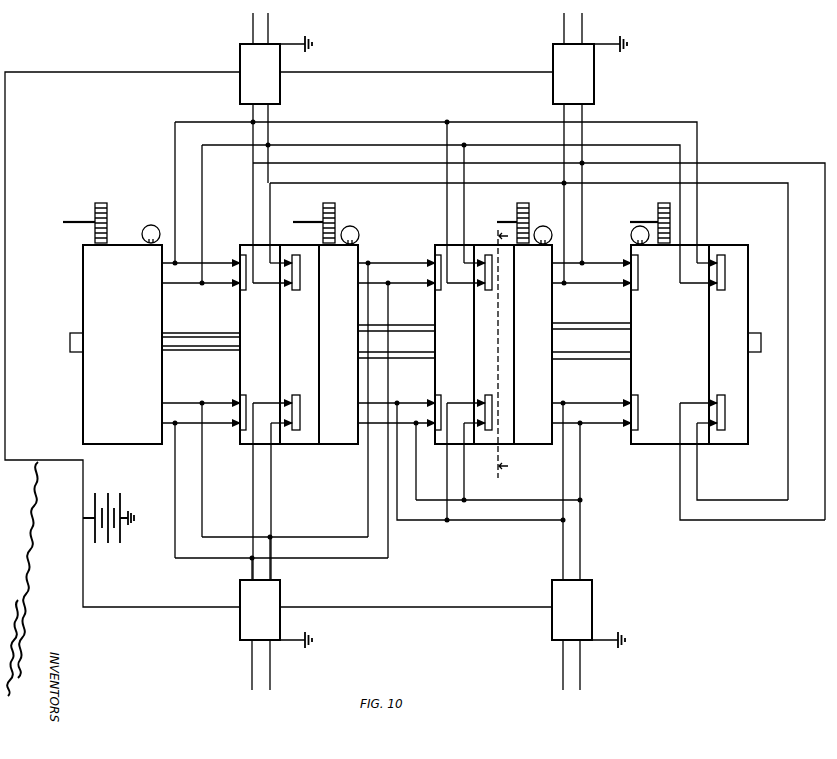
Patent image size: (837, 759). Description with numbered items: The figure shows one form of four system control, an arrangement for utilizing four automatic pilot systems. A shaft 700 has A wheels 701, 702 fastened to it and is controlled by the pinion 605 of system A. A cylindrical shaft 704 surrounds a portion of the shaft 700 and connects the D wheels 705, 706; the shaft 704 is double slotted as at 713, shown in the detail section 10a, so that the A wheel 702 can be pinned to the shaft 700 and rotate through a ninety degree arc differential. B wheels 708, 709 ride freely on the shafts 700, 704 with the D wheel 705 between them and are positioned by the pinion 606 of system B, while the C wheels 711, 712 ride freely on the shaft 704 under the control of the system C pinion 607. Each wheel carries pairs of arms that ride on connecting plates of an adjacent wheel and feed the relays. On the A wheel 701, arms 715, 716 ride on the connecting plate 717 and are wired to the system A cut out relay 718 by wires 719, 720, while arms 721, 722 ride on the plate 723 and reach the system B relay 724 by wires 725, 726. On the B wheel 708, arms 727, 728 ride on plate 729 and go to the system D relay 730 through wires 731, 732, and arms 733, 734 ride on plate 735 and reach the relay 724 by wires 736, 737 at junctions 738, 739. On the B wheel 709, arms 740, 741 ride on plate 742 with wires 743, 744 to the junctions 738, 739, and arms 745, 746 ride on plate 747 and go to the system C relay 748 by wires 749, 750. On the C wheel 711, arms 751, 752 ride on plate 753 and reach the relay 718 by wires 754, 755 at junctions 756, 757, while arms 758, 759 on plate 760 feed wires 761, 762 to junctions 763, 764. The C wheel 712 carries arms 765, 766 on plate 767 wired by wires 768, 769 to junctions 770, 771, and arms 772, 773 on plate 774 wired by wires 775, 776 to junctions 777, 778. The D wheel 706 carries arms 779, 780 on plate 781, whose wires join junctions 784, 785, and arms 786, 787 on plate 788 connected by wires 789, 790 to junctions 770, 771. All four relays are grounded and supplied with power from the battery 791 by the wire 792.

The shaft 700 is at (70, 347).
The A wheel 701 is at (103, 447).
The A wheel 702 is at (494, 344).
The cylindrical shaft 704 is at (396, 341).
The D wheel 705 is at (300, 446).
The D wheel 706 is at (642, 447).
The B wheel 708 is at (243, 447).
The B wheel 709 is at (345, 446).
The C wheel 711 is at (454, 344).
The C wheel 712 is at (533, 344).
The double slot 713 is at (728, 344).
The arm 715 is at (182, 270).
The arm 716 is at (186, 290).
The connecting plate 717 is at (657, 198).
The system A cut out relay 718 is at (238, 48).
The wire 719 is at (185, 122).
The wire 720 is at (227, 138).
The arm 721 is at (176, 400).
The arm 722 is at (196, 424).
The connecting plate 723 is at (236, 394).
The system B relay 724 is at (238, 633).
The wire 725 is at (174, 486).
The wire 726 is at (206, 521).
The arm 727 is at (270, 268).
The arm 728 is at (262, 290).
The connecting plate 729 is at (294, 293).
The system D relay 730 is at (596, 76).
The wire 731 is at (292, 162).
The wire 732 is at (292, 182).
The arm 733 is at (268, 402).
The arm 734 is at (272, 420).
The connecting plate 735 is at (295, 392).
The wire 736 is at (250, 498).
The wire 737 is at (280, 486).
The junction 738 is at (250, 558).
The junction 739 is at (276, 536).
The arm 740 is at (372, 260).
The arm 741 is at (406, 286).
The connecting plate 742 is at (434, 256).
The wire 743 is at (332, 524).
The wire 744 is at (318, 558).
The arm 745 is at (418, 404).
The arm 746 is at (410, 420).
The plate 747 is at (444, 391).
The system C relay 748 is at (594, 612).
The wire 749 is at (410, 520).
The wire 750 is at (418, 492).
The arm 751 is at (462, 268).
The arm 752 is at (454, 290).
The connecting plate 753 is at (492, 258).
The wire 754 is at (447, 217).
The wire 755 is at (466, 216).
The junction 756 is at (250, 125).
The junction 757 is at (268, 148).
The arm 758 is at (462, 402).
The arm 759 is at (466, 420).
The connecting plate 760 is at (488, 392).
The wire 761 is at (446, 470).
The wire 762 is at (464, 462).
The junction 763 is at (440, 525).
The junction 764 is at (466, 496).
The arm 765 is at (590, 260).
The arm 766 is at (590, 276).
The connection plate 767 is at (638, 292).
The wire 768 is at (550, 222).
The wire 769 is at (584, 222).
The junction 770 is at (556, 187).
The junction 771 is at (586, 161).
The arm 772 is at (590, 394).
The arm 773 is at (590, 420).
The plate 774 is at (638, 402).
The wire 775 is at (560, 478).
The wire 776 is at (583, 474).
The junction 777 is at (550, 530).
The junction 778 is at (584, 500).
The arm 779 is at (690, 270).
The arm 780 is at (688, 290).
The plate 781 is at (725, 274).
The junction 784 is at (442, 110).
The junction 785 is at (472, 135).
The arm 786 is at (692, 396).
The arm 787 is at (694, 421).
The connection plate 788 is at (718, 392).
The wire 789 is at (706, 521).
The wire 790 is at (714, 500).
The battery 791 is at (108, 548).
The wire 792 is at (57, 72).
The pinion 605 is at (92, 197).
The pinion 606 is at (336, 200).
The pinion 607 is at (526, 201).
The section line 10a is at (491, 354).